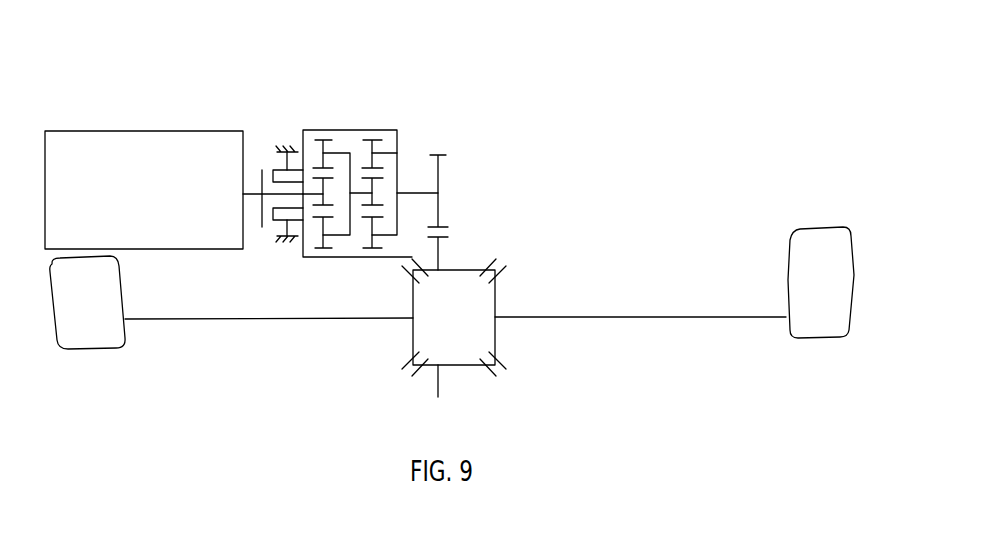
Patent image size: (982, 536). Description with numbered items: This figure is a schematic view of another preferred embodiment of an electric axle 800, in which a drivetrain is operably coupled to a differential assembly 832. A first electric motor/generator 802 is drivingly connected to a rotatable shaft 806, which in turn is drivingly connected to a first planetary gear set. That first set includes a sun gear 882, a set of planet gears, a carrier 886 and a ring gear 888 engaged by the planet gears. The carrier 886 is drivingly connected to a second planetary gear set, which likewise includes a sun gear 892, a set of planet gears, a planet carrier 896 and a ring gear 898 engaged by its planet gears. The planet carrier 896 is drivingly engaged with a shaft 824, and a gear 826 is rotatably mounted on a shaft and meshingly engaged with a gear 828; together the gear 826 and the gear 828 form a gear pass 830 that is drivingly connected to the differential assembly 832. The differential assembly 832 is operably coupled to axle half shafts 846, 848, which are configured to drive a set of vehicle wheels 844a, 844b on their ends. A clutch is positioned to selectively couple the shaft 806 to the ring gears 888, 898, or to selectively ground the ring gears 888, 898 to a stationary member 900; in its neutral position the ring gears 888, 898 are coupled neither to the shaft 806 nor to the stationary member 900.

The electric axle 800 is at (614, 107).
The first electric motor/generator 802 is at (166, 203).
The rotatable shaft 806 is at (253, 193).
The stationary member 900 is at (267, 124).
The ring gear 888 is at (317, 124).
The carrier 886 is at (340, 153).
The ring gear 898 is at (374, 119).
The planet carrier 896 is at (388, 152).
The sun gear 882 is at (323, 200).
The sun gear 892 is at (372, 201).
The shaft 824 is at (404, 192).
The gear 826 is at (443, 155).
The gear pass 830 is at (449, 125).
The differential assembly 832 is at (465, 270).
The gear 828 is at (455, 410).
The axle half shaft 846 is at (157, 320).
The axle half shaft 848 is at (607, 317).
The vehicle wheel 844a is at (124, 381).
The vehicle wheel 844b is at (841, 338).